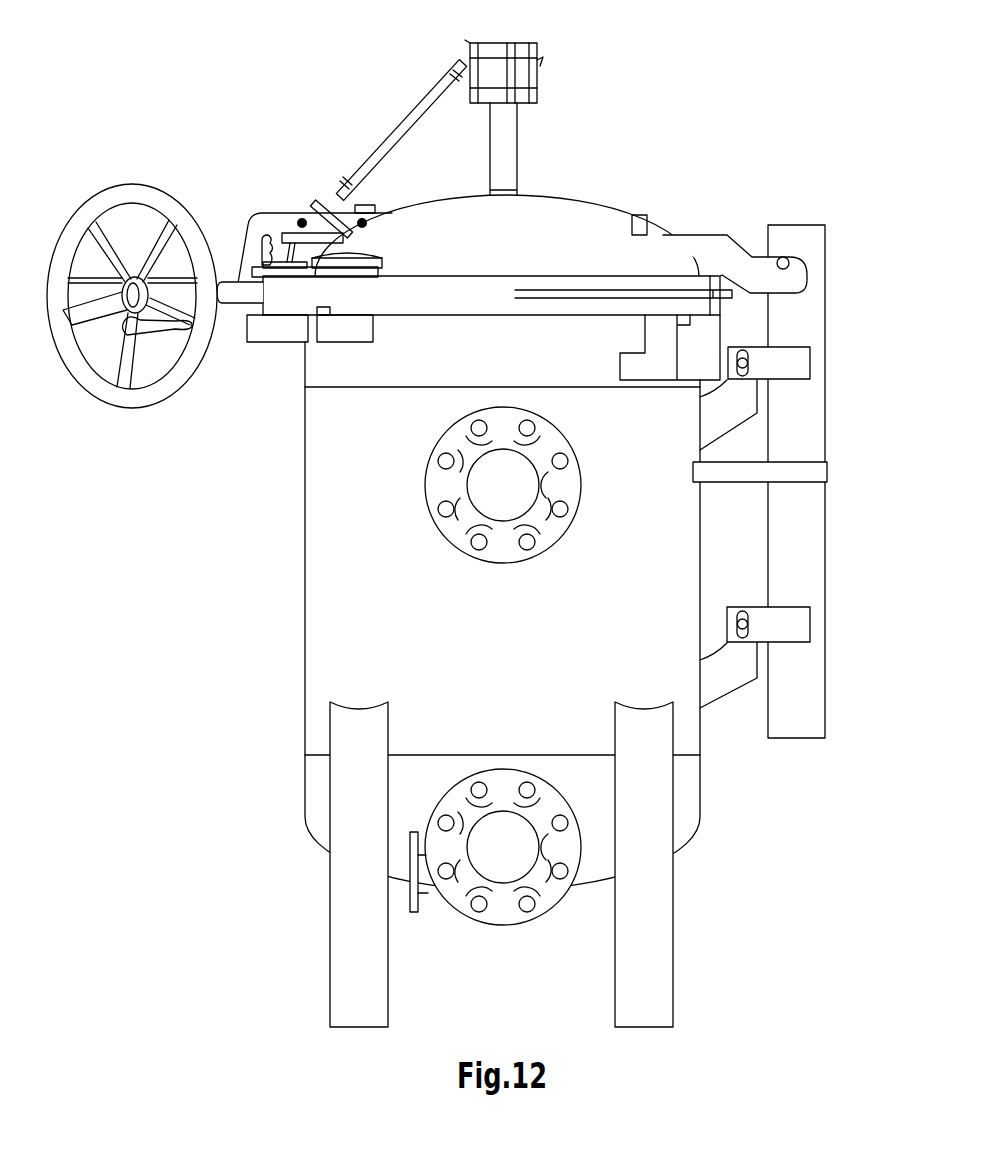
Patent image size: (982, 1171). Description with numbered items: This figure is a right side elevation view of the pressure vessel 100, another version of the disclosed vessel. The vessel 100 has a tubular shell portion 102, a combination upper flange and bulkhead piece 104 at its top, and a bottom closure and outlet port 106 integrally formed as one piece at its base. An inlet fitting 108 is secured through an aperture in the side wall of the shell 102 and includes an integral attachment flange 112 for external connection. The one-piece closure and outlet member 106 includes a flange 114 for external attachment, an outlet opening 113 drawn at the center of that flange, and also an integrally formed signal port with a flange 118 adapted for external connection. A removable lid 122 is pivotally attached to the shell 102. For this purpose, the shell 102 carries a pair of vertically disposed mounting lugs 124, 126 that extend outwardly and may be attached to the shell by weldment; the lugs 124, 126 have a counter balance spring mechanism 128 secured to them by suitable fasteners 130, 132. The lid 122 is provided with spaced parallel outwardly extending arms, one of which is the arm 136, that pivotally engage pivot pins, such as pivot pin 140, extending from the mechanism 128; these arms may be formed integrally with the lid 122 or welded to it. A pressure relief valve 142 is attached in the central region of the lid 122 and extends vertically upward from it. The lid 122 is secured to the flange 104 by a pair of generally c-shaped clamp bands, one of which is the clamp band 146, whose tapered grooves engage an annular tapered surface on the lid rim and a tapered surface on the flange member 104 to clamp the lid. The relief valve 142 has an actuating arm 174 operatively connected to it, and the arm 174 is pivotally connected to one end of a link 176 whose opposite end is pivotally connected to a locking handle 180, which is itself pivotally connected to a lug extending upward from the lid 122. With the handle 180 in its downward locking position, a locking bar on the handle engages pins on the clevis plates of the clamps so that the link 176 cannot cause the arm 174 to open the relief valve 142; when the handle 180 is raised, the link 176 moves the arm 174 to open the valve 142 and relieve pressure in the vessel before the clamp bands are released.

The pressure vessel 100 is at (295, 92).
The tubular shell portion 102 is at (300, 652).
The combination upper flange and bulkhead piece 104 is at (292, 365).
The bottom closure and outlet port 106 is at (690, 843).
The inlet fitting 108 is at (418, 477).
The attachment flange 112 is at (450, 530).
The outlet opening 113 is at (517, 875).
The flange 114 is at (457, 910).
The flange 118 is at (408, 850).
The removable lid 122 is at (608, 197).
The mounting lug 124 is at (716, 708).
The mounting lug 126 is at (730, 437).
The counter balance spring mechanism 128 is at (826, 510).
The fastener 130 is at (748, 624).
The fastener 132 is at (750, 360).
The outwardly extending arm 136 is at (700, 233).
The pivot pin 140 is at (786, 257).
The pressure relief valve 142 is at (552, 80).
The c-shaped clamp band 146 is at (460, 276).
The actuating arm 174 is at (140, 183).
The link 176 is at (397, 128).
The locking handle 180 is at (247, 235).